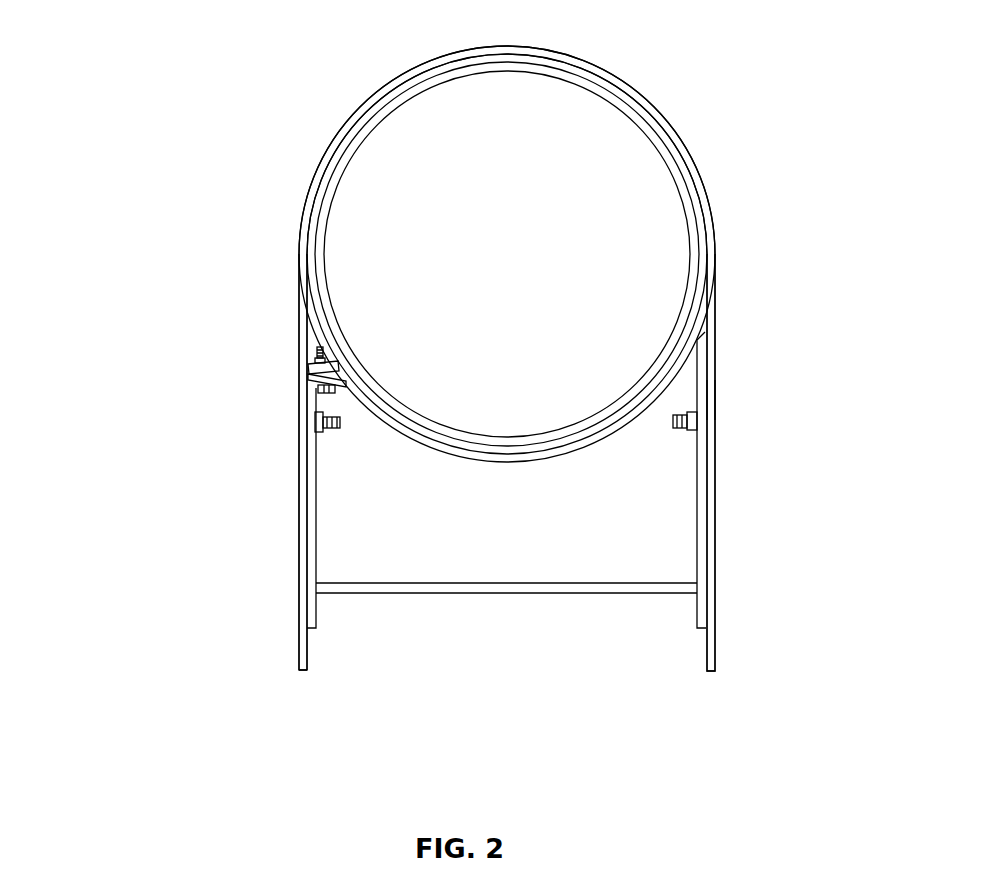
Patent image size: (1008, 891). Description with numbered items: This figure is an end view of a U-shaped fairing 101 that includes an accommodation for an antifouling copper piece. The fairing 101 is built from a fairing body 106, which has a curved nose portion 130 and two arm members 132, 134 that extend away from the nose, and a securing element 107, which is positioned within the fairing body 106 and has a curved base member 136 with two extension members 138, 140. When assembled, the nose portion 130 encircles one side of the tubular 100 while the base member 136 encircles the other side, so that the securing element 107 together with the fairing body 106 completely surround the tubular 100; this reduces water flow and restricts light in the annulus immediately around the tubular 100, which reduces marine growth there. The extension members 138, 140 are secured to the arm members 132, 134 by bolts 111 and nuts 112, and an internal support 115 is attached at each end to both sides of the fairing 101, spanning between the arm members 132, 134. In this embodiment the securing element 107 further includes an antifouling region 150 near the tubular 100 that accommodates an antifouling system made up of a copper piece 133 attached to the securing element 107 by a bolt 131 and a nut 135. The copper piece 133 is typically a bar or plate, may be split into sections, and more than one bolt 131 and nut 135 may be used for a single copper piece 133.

The tubular 100 is at (360, 137).
The nose portion 130 is at (645, 95).
The fairing 101 is at (728, 197).
The fairing body 106 is at (717, 332).
The arm member 132 is at (717, 396).
The arm member 134 is at (294, 411).
The securing element 107 is at (415, 447).
The base member 136 is at (505, 463).
The nut 135 is at (305, 358).
The copper piece 133 is at (305, 369).
The antifouling region 150 is at (340, 378).
The bolt 131 is at (318, 386).
The nut 112 is at (312, 423).
The bolt 111 is at (330, 432).
The extension member 140 is at (318, 543).
The extension member 138 is at (693, 538).
The internal support 115 is at (680, 582).